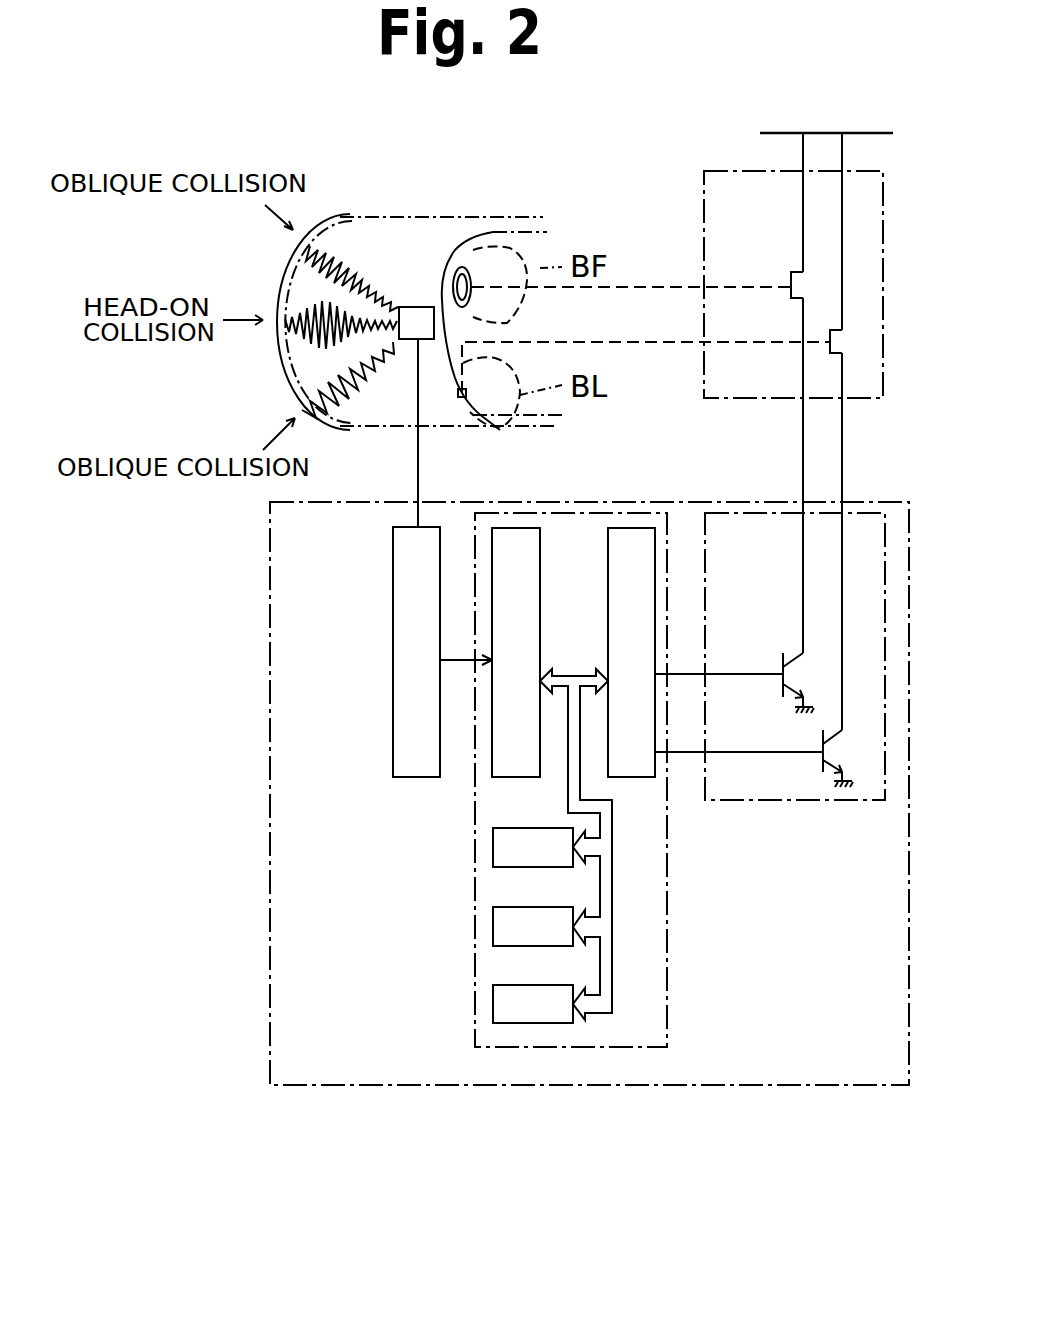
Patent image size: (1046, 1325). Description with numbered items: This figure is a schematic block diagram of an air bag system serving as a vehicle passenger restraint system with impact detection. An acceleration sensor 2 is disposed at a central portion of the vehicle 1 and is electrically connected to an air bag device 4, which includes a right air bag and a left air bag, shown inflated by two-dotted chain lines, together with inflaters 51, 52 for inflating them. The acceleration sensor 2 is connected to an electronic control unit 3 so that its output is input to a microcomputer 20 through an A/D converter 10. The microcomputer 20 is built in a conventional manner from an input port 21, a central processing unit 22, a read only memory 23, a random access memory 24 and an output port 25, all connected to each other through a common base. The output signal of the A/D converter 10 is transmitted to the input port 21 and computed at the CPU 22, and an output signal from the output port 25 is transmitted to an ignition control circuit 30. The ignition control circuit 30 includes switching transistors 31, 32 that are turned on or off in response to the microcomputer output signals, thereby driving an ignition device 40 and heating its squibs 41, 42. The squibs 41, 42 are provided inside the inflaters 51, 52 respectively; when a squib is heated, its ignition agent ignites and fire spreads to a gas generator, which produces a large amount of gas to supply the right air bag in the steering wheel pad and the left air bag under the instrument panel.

The vehicle 1 is at (365, 430).
The acceleration sensor 2 is at (414, 312).
The electronic control unit 3 is at (385, 1085).
The air bag device 4 is at (500, 218).
The A/D converter 10 is at (393, 630).
The microcomputer 20 is at (668, 997).
The input port 21 is at (516, 652).
The central processing unit (CPU) 22 is at (493, 846).
The read only memory (ROM) 23 is at (493, 925).
The random access memory (RAM) 24 is at (493, 1003).
The output port 25 is at (631, 652).
The ignition control circuit 30 is at (768, 800).
The switching transistor 31 is at (734, 686).
The switching transistor 32 is at (754, 764).
The ignition device 40 is at (704, 368).
The squib 41 is at (800, 286).
The squib 42 is at (842, 342).
The inflater 51 is at (455, 272).
The inflater 52 is at (458, 400).